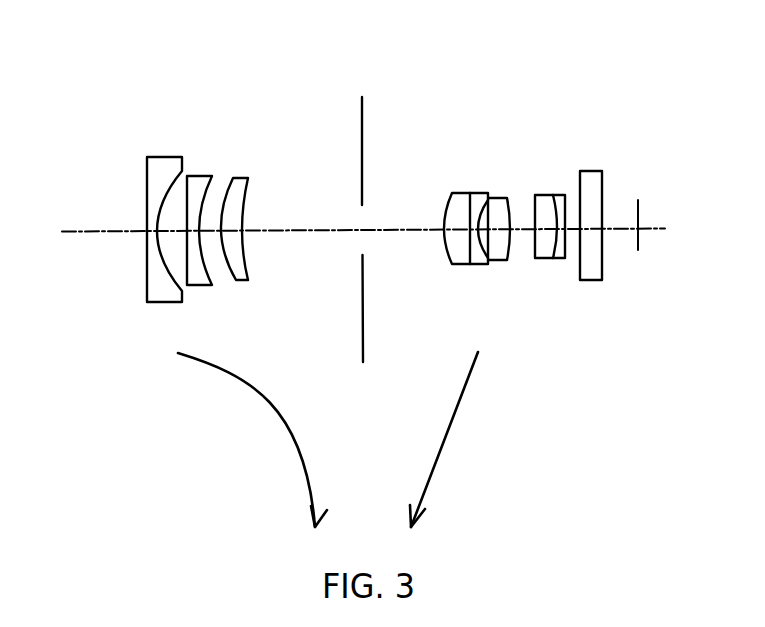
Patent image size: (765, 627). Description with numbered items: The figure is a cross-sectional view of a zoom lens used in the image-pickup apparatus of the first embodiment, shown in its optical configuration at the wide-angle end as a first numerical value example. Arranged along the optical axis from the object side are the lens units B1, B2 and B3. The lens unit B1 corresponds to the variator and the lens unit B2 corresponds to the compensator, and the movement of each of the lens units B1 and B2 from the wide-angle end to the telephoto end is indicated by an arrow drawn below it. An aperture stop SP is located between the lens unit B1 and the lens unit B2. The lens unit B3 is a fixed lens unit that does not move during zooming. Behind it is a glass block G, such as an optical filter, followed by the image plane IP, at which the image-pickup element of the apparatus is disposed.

The lens unit B1 is at (222, 101).
The aperture stop SP is at (343, 197).
The lens unit B2 is at (500, 98).
The fixed lens unit B3 is at (565, 98).
The glass block G is at (612, 98).
The image plane IP is at (656, 199).